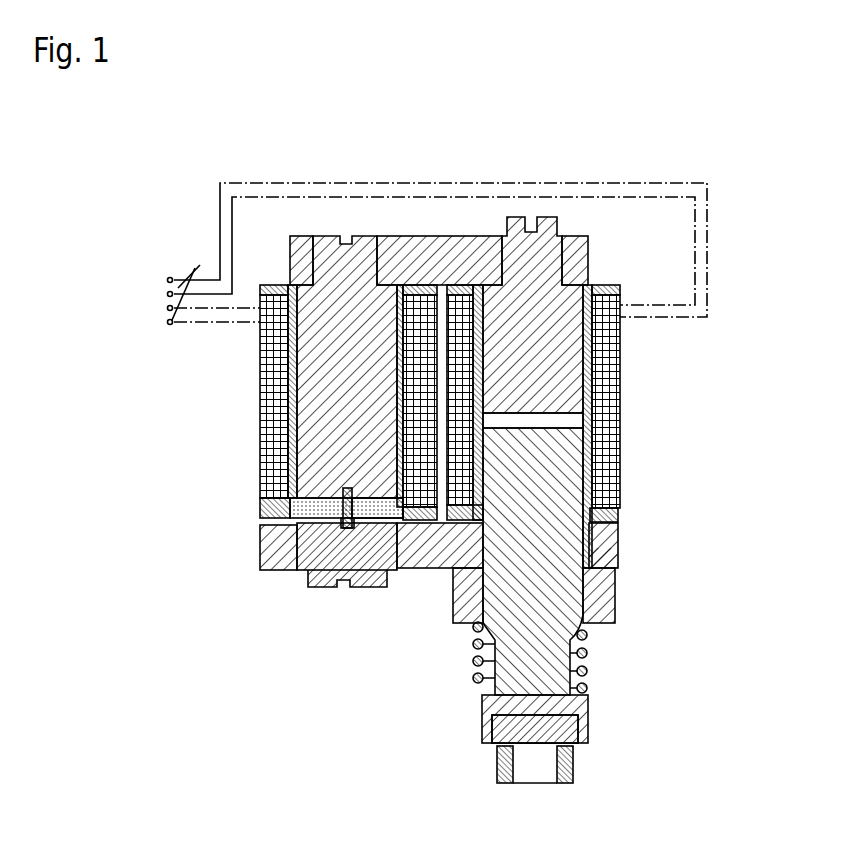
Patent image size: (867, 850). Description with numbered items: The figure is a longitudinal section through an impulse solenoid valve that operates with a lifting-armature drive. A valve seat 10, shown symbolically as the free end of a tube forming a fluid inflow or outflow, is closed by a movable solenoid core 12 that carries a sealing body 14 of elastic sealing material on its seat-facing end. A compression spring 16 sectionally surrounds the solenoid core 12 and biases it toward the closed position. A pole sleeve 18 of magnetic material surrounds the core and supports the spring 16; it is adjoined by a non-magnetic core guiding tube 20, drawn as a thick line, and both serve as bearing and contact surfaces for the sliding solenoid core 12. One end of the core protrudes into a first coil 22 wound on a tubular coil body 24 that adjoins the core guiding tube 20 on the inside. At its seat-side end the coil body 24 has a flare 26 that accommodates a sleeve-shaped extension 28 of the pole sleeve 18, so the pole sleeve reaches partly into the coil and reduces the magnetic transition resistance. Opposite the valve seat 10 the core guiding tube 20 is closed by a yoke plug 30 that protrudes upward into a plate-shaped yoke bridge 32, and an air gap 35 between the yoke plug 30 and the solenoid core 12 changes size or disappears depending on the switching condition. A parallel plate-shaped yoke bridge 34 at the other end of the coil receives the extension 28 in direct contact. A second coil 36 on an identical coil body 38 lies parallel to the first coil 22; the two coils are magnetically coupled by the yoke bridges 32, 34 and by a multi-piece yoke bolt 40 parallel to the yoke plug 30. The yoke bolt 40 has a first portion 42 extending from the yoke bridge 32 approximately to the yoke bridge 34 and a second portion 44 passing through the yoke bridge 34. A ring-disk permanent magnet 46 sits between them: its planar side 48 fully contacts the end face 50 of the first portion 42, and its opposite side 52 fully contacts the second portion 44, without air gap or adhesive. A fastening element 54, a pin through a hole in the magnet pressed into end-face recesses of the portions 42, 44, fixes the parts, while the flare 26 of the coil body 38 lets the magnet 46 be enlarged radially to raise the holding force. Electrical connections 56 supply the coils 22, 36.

The valve seat 10 is at (568, 770).
The movable solenoid core 12 is at (562, 462).
The sealing body 14 is at (575, 735).
The compression spring 16 is at (590, 654).
The pole sleeve 18 is at (605, 600).
The core guiding tube 20 is at (595, 402).
The first coil 22 is at (603, 343).
The coil body 24 is at (615, 520).
The flare 26 is at (596, 500).
The sleeve-shaped extension 28 is at (452, 562).
The yoke plug 30 is at (565, 370).
The yoke bridge 32 is at (600, 262).
The yoke bridge 34 is at (618, 552).
The air gap 35 is at (572, 428).
The second coil 36 is at (275, 343).
The coil body 38 is at (268, 535).
The yoke bolt 40 is at (366, 224).
The first portion 42 is at (330, 390).
The second portion 44 is at (292, 573).
The permanent magnet 46 is at (283, 553).
The side 48 is at (293, 497).
The end face 50 is at (383, 500).
The opposite side 52 is at (352, 528).
The fastening element 54 is at (340, 491).
The electrical connections 56 is at (438, 254).